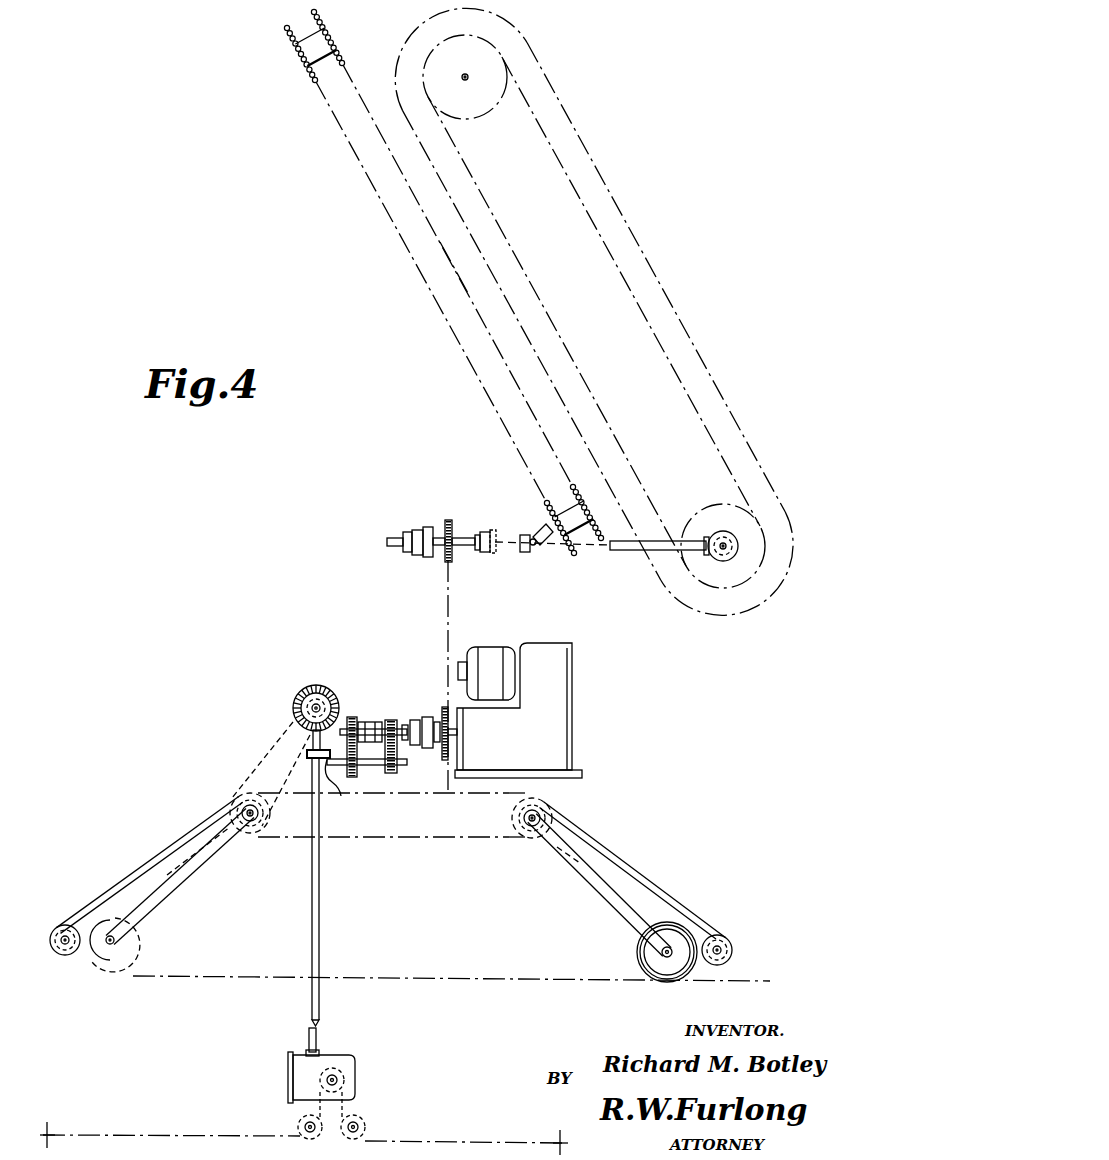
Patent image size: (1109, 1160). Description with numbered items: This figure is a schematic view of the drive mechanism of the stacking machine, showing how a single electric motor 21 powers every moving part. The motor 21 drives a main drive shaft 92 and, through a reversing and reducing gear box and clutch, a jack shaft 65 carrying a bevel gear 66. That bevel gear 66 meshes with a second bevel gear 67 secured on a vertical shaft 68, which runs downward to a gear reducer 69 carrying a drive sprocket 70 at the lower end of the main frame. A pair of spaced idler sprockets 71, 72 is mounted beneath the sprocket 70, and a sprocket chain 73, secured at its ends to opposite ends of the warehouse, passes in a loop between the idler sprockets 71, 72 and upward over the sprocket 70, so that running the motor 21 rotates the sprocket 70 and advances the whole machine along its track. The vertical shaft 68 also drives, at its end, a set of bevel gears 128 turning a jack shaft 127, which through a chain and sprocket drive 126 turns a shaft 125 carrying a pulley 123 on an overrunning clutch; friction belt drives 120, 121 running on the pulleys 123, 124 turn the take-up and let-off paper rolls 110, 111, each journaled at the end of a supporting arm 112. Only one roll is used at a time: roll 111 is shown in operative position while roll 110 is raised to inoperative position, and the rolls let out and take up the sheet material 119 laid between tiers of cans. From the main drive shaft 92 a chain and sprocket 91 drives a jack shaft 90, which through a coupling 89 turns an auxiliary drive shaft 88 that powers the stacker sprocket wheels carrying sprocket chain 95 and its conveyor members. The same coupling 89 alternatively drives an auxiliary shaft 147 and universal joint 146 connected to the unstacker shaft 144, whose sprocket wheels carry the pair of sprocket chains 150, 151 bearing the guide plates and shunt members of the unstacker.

The electric motor 21 is at (496, 656).
The jack shaft 65 is at (374, 768).
The bevel gear 66 is at (342, 787).
The second bevel gear 67 is at (308, 753).
The vertical shaft 68 is at (320, 896).
The gear reducer 69 is at (350, 1055).
The sprocket 70 is at (340, 1078).
The idler sprocket 71 is at (300, 1120).
The idler sprocket 72 is at (362, 1118).
The sprocket chain 73 is at (140, 1135).
The auxiliary drive shaft 88 is at (627, 552).
The coupling 89 is at (482, 551).
The jack shaft 90 is at (470, 533).
The chain and sprocket 91 is at (444, 610).
The main drive shaft 92 is at (378, 722).
The sprocket chain 95 is at (604, 250).
The take-up and let-off paper roll 110 is at (92, 950).
The take-up and let-off paper roll 111 is at (682, 936).
The supporting arm 112 is at (167, 890).
The sheet material 119 is at (703, 983).
The friction belt drive 120 is at (166, 852).
The friction belt drive 121 is at (637, 876).
The pulley 123 is at (238, 797).
The pulley 124 is at (58, 926).
The shaft 125 is at (260, 834).
The chain and sprocket drive 126 is at (295, 723).
The jack shaft 127 is at (308, 704).
The bevel gears 128 is at (317, 686).
The horizontal shaft 144 is at (551, 532).
The universal joint 146 is at (531, 553).
The auxiliary shaft 147 is at (505, 538).
The sprocket chain 150 is at (408, 250).
The sprocket chain 151 is at (467, 296).